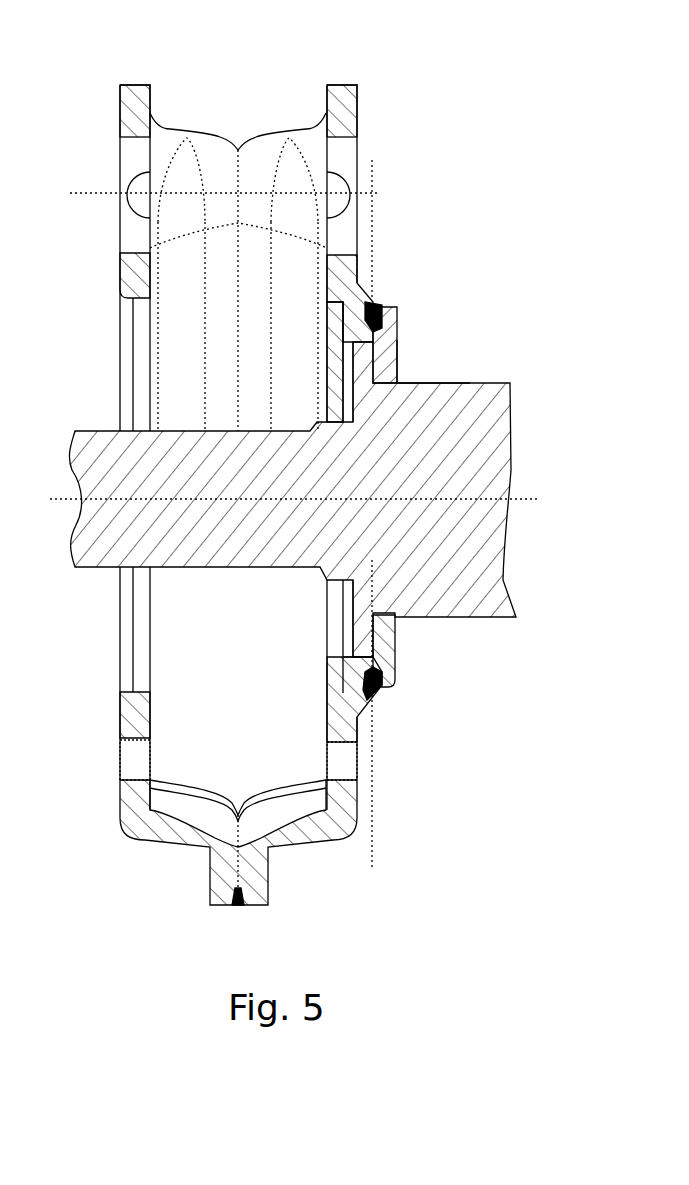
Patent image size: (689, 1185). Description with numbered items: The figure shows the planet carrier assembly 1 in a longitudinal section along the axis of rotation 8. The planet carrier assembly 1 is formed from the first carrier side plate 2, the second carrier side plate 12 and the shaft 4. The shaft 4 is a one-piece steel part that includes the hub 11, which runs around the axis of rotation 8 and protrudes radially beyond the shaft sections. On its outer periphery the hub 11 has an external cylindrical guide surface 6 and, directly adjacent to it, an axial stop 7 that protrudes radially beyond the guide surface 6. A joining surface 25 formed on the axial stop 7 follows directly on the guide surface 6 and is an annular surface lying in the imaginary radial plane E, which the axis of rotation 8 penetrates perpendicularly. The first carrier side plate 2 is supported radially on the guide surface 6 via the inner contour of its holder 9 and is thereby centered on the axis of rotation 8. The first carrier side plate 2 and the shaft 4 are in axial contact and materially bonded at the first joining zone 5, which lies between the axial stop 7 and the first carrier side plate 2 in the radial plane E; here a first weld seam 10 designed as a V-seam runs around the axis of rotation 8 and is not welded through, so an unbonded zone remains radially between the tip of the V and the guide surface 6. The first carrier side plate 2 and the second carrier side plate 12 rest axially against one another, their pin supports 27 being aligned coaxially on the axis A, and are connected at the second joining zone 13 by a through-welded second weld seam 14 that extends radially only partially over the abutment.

The planet carrier assembly 1 is at (497, 178).
The first carrier side plate 2 is at (345, 85).
The shaft 4 is at (505, 552).
The first joining zone 5 is at (396, 312).
The guide surface 6 is at (378, 702).
The axial stop 7 is at (408, 359).
The axis of rotation 8 is at (537, 498).
The holder 9 is at (400, 342).
The first weld seam 10 is at (380, 300).
The hub 11 is at (396, 625).
The second carrier side plate 12 is at (140, 85).
The second joining zone 13 is at (212, 880).
The second weld seam 14 is at (238, 906).
The joining surface 25 is at (396, 650).
The pin supports 27 is at (140, 137).
The axis A is at (80, 193).
The radial plane E is at (373, 508).